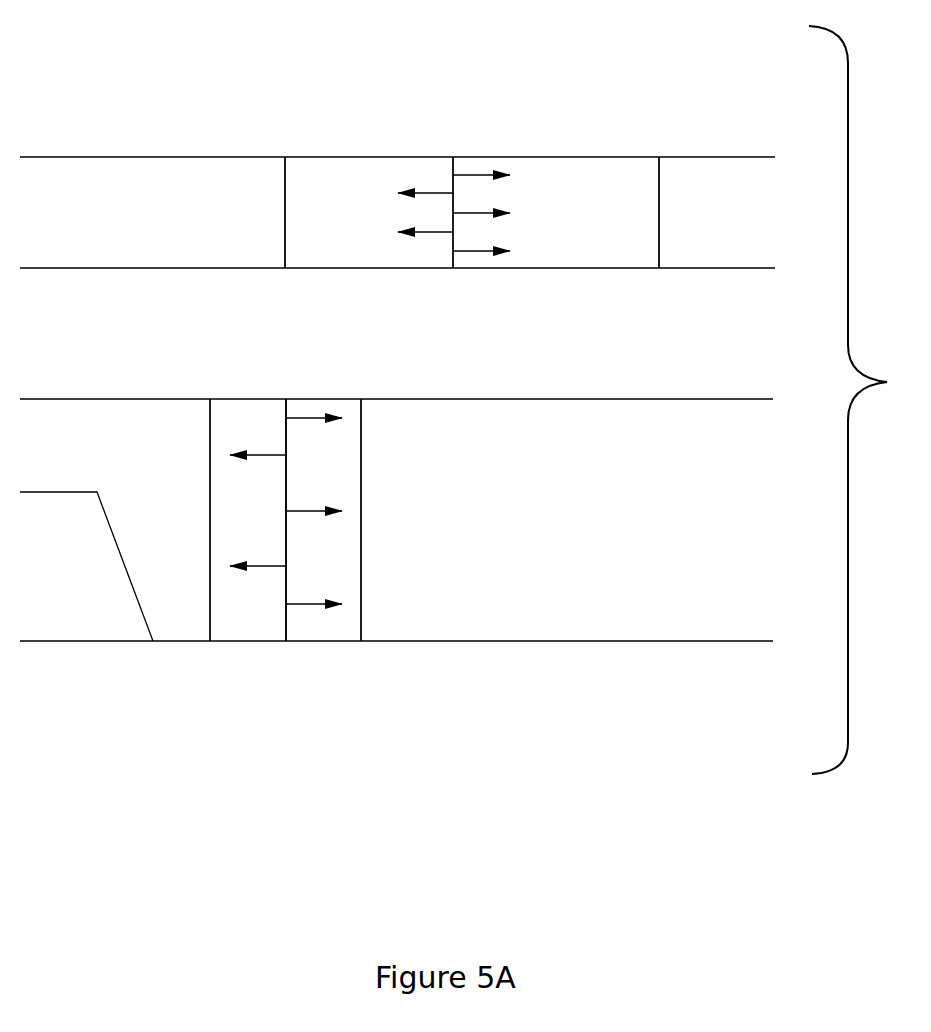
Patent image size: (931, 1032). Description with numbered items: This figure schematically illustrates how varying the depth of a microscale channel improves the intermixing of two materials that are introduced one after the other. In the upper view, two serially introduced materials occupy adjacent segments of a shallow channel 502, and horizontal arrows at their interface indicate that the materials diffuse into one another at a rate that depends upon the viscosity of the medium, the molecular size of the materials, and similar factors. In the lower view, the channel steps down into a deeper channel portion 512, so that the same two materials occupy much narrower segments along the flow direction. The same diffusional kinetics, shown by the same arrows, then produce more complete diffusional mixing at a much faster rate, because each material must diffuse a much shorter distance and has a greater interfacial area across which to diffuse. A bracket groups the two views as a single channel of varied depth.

The shallow channel 502 is at (134, 212).
The deeper channel portion 512 is at (623, 549).